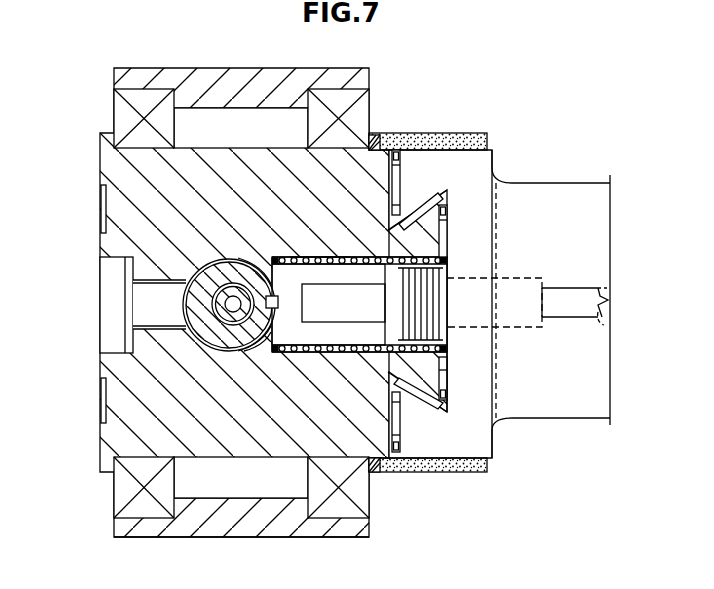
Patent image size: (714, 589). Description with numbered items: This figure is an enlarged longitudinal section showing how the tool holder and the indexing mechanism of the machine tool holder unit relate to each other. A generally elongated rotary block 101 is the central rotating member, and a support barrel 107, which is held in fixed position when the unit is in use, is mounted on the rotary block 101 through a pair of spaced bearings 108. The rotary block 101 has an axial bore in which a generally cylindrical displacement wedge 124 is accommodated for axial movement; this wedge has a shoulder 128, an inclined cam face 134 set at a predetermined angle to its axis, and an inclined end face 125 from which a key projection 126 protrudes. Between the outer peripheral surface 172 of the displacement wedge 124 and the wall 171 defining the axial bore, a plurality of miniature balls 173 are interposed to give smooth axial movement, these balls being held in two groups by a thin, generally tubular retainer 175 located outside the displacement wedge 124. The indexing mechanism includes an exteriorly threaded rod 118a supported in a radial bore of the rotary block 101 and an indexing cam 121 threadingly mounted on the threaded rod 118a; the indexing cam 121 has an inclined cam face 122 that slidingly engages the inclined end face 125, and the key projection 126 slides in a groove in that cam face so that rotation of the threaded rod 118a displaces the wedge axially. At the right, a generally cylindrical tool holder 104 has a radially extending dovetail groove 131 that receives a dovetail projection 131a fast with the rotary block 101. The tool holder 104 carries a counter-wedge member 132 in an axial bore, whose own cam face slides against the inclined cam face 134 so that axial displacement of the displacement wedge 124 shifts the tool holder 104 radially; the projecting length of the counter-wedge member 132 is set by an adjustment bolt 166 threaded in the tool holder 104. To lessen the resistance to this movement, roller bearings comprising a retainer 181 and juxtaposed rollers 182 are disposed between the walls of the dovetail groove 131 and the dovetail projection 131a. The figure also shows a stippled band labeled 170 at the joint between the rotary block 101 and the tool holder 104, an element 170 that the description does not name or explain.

The rotary block 101 is at (120, 176).
The tool holder 104 is at (597, 262).
The support barrel 107 is at (250, 522).
The bearings 108 is at (124, 112).
The threaded rod 118a is at (173, 257).
The indexing cam 121 is at (205, 332).
The inclined cam face 122 is at (264, 254).
The displacement wedge 124 is at (260, 357).
The inclined end face 125 is at (233, 353).
The key projection 126 is at (262, 292).
The shoulder 128 is at (340, 308).
The dovetail groove 131 is at (447, 340).
The dovetail projection 131a is at (455, 230).
The counter-wedge member 132 is at (445, 310).
The inclined cam face 134 is at (390, 300).
The adjustment bolt 166 is at (590, 312).
The insulating layer 170 is at (428, 140).
The wall 171 is at (332, 256).
The outer peripheral surface 172 is at (298, 257).
The miniature balls 173 is at (278, 255).
The retainer 175 is at (455, 256).
The retainer 181 is at (400, 217).
The rollers 182 is at (396, 190).